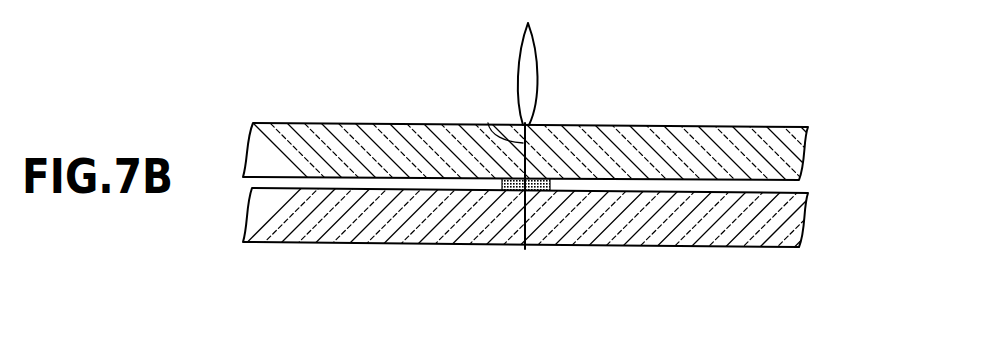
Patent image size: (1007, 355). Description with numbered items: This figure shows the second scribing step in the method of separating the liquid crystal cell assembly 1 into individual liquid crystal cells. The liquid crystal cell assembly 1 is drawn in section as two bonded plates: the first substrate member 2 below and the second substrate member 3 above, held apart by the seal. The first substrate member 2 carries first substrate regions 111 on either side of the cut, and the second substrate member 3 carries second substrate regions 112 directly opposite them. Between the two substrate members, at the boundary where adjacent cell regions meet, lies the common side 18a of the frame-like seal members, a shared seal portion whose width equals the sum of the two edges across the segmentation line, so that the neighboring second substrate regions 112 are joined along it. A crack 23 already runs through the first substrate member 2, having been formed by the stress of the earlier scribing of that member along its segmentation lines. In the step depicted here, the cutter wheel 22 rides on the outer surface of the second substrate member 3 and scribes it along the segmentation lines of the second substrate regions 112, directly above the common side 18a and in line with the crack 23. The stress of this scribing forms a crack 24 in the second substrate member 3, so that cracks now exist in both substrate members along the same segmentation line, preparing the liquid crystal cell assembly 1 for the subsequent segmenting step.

The liquid crystal cell assembly 1 is at (564, 171).
The first substrate member 2 is at (547, 260).
The second substrate member 3 is at (550, 113).
The first substrate region 111 is at (348, 222).
The second substrate region 112 is at (355, 133).
The common side 18a is at (531, 194).
The cutter wheel 22 is at (533, 38).
The crack 23 is at (523, 220).
The crack 24 is at (488, 123).